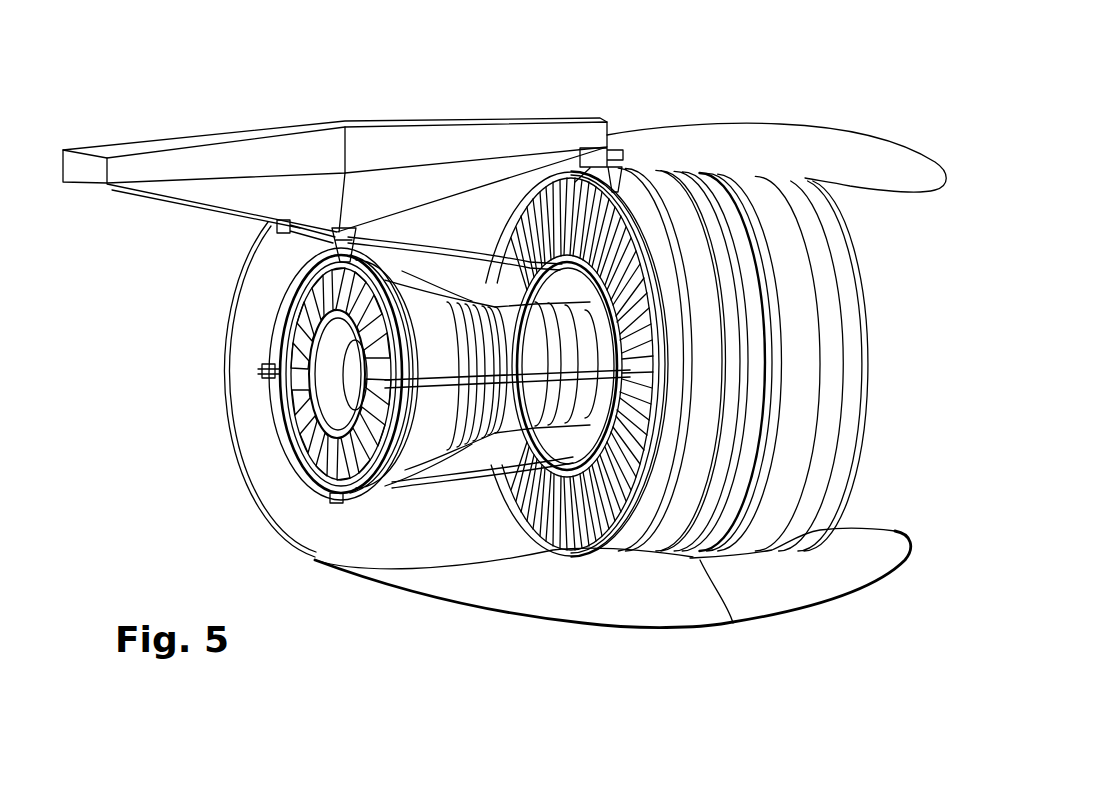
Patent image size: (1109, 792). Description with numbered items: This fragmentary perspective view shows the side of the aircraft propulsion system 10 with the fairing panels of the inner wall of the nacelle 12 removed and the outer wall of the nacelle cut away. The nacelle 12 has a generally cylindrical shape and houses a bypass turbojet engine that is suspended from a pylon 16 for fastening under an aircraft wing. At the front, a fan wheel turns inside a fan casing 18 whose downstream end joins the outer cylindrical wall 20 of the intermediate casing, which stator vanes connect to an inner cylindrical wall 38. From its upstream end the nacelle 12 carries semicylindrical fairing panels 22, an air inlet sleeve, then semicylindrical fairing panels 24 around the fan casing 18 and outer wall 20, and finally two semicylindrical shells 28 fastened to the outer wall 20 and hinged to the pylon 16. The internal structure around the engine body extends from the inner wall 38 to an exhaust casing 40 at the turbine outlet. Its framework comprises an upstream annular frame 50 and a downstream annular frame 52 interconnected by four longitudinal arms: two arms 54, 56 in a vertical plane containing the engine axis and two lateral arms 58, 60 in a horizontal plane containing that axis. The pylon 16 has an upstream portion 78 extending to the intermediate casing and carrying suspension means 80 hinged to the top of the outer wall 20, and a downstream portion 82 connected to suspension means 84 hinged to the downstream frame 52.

The aircraft propulsion system 10 is at (750, 88).
The nacelle 12 is at (874, 128).
The pylon 16 is at (223, 129).
The fan casing 18 is at (843, 318).
The outer cylindrical wall of the intermediate casing 20 is at (652, 506).
The semicylindrical fairing panels 22 is at (803, 586).
The semicylindrical fairing panels 24 is at (607, 603).
The semicylindrical shells 28 is at (348, 548).
The inner cylindrical wall of the intermediate casing 38 is at (592, 540).
The exhaust casing 40 is at (298, 482).
The upstream frame 50 is at (538, 532).
The downstream frame 52 is at (306, 270).
The arm 54 is at (400, 245).
The arm 56 is at (405, 503).
The lateral arm 58 is at (264, 372).
The lateral arm 60 is at (452, 422).
The upstream portion of the pylon 78 is at (545, 167).
The suspension means 80 is at (613, 148).
The downstream portion of the pylon 82 is at (358, 198).
The suspension means 84 is at (366, 236).